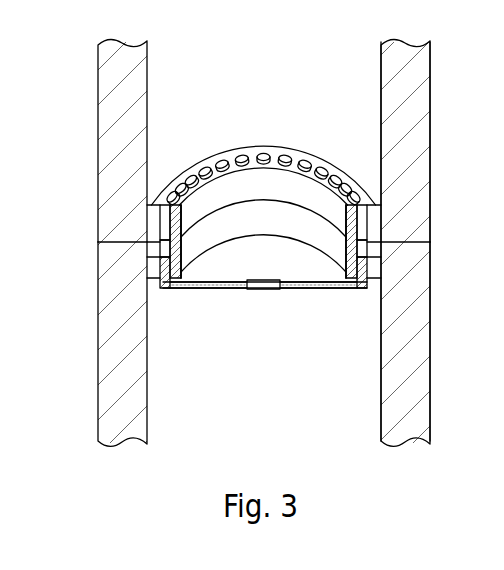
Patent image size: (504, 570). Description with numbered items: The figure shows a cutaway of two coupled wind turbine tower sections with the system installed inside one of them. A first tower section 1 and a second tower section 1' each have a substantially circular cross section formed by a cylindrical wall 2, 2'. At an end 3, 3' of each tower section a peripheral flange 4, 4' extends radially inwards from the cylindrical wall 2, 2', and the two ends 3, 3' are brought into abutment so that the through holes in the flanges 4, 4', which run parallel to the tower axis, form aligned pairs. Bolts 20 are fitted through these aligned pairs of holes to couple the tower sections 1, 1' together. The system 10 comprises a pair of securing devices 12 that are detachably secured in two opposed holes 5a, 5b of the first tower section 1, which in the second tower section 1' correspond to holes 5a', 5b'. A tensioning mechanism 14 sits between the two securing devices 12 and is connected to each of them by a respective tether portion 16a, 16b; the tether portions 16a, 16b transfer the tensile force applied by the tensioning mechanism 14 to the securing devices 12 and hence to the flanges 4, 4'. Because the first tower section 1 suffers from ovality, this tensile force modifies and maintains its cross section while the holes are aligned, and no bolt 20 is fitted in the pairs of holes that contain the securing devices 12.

The first tower section 1 is at (432, 350).
The second tower section 1' is at (434, 141).
The cylindrical wall 2 is at (262, 366).
The cylindrical wall 2' is at (264, 143).
The end 3 is at (287, 245).
The end 3' is at (431, 245).
The flange 4 is at (217, 288).
The flange 4' is at (312, 183).
The opposed hole 5a is at (106, 259).
The through hole 5a' is at (106, 213).
The opposed hole 5b is at (419, 267).
The through hole 5b' is at (421, 221).
The system 10 is at (368, 357).
The securing device 12 is at (165, 289).
The tensioning mechanism 14 is at (257, 289).
The tether portion 16a is at (205, 289).
The tether portion 16b is at (300, 289).
The bolt 20 is at (189, 174).